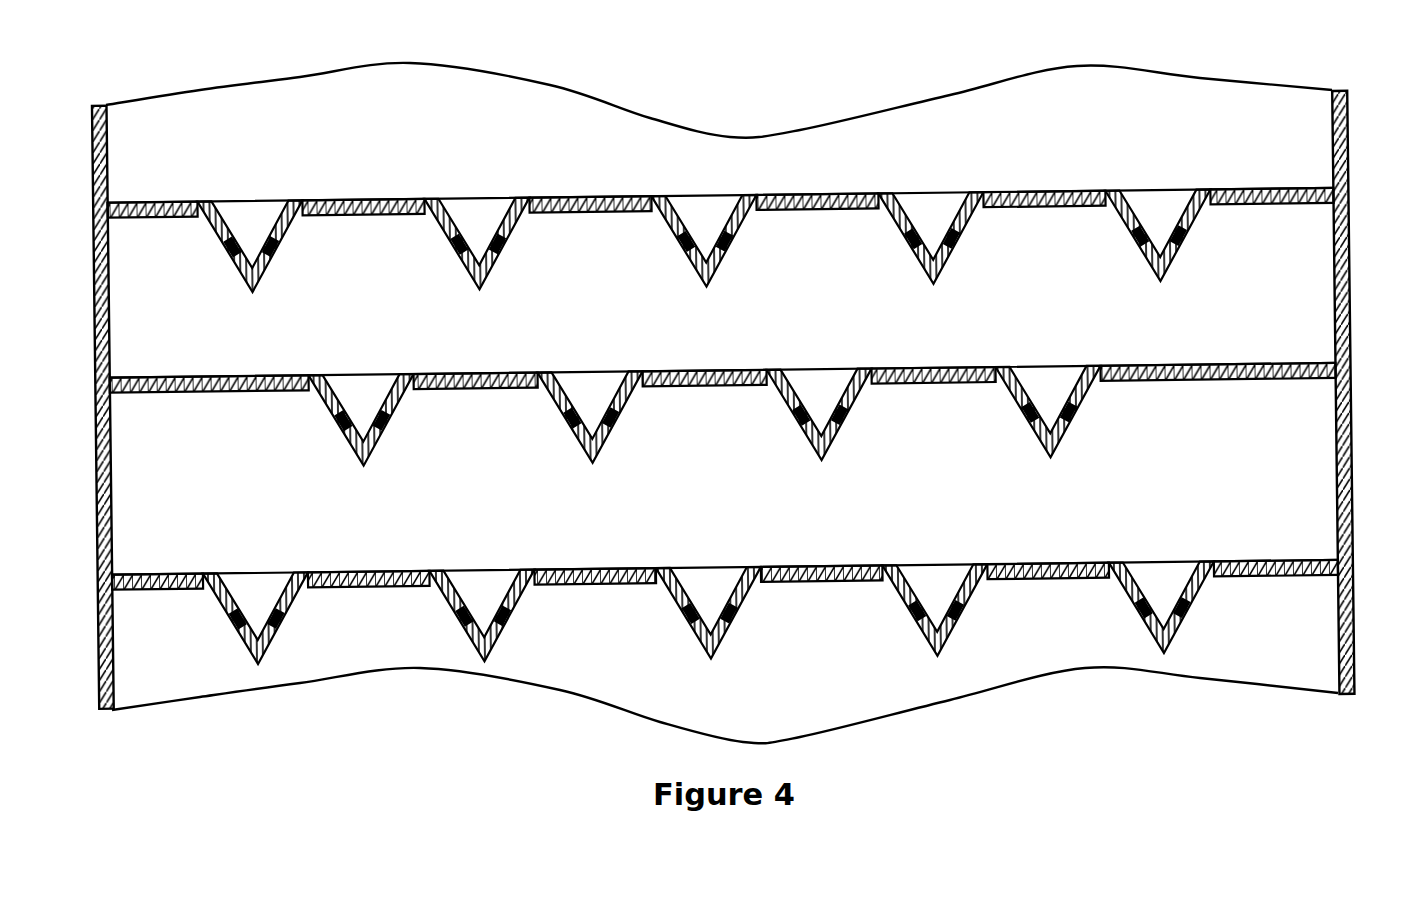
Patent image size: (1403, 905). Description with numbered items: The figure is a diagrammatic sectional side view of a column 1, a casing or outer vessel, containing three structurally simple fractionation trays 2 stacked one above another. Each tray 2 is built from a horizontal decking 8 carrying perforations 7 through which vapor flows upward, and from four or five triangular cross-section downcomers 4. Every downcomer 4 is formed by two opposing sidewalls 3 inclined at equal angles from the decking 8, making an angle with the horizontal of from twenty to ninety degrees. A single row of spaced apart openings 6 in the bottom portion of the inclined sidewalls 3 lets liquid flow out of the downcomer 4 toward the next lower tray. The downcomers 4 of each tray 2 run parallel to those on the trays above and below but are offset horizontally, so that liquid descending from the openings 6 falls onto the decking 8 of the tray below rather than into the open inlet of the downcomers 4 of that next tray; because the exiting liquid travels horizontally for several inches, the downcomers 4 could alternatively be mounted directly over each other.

The column 1 is at (1348, 195).
The tray 2 is at (1090, 186).
The inclined sidewall 3 is at (732, 632).
The V-shaped channel 4 is at (706, 426).
The opening 6 is at (905, 250).
The perforation 7 is at (378, 203).
The decking 8 is at (1030, 192).